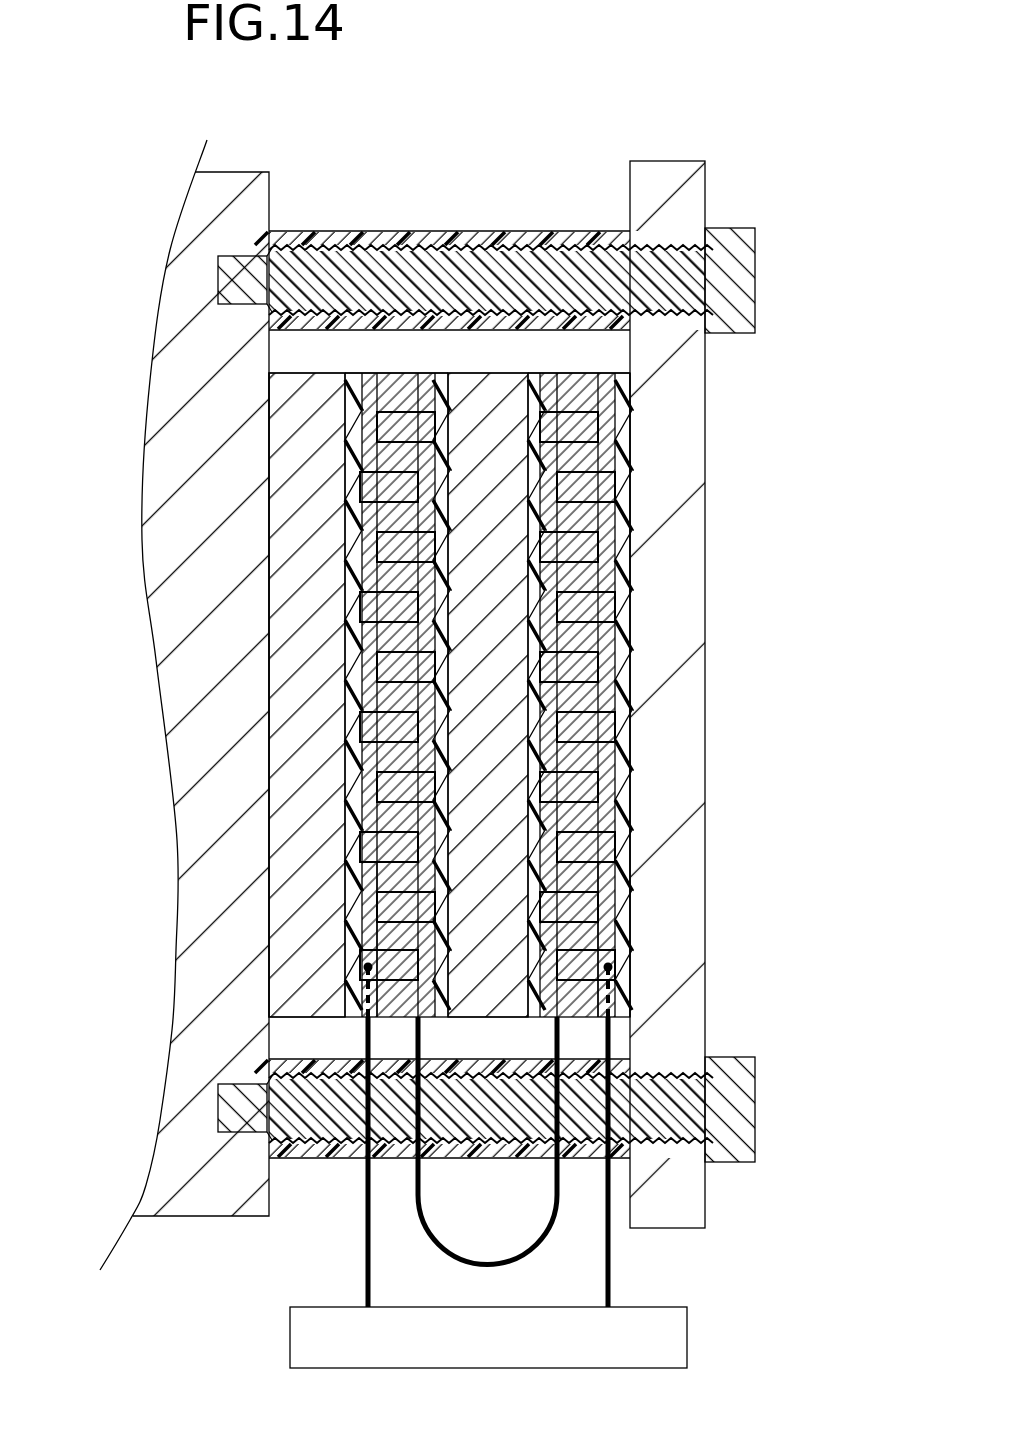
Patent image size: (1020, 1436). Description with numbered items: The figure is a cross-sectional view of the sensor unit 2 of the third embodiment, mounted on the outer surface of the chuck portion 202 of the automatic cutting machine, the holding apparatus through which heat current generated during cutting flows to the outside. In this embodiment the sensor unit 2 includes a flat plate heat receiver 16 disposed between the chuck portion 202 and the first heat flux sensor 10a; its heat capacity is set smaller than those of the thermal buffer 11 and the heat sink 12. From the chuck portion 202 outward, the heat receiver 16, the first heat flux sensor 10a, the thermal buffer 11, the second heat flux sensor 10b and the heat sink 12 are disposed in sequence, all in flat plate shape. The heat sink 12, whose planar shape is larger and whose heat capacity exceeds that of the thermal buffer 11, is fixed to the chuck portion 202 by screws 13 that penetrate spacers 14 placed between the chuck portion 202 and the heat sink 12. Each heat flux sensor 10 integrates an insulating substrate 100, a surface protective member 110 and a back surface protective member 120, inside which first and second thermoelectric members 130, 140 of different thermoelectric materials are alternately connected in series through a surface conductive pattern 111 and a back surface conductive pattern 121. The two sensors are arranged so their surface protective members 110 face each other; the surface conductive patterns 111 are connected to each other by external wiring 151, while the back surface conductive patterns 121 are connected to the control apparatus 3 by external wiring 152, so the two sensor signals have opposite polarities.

The sensor unit 2 is at (690, 96).
The control apparatus 3 is at (672, 1342).
The heat flux sensor 10 is at (410, 400).
The first heat flux sensor 10a is at (366, 376).
The second heat flux sensor 10b is at (590, 368).
The thermal buffer 11 is at (493, 392).
The heat sink 12 is at (665, 178).
The screw 13 is at (727, 323).
The spacer 14 is at (613, 240).
The heat receiver 16 is at (300, 390).
The insulating substrate 100 is at (375, 628).
The surface protective member 110 is at (425, 522).
The surface conductive pattern 111 is at (377, 920).
The back surface protective member 120 is at (360, 577).
The back surface conductive pattern 121 is at (367, 955).
The first thermoelectric member 130 is at (385, 870).
The second thermoelectric member 140 is at (418, 925).
The external wiring 151 is at (428, 1233).
The external wiring 152 is at (366, 1280).
The chuck portion 202 is at (246, 198).